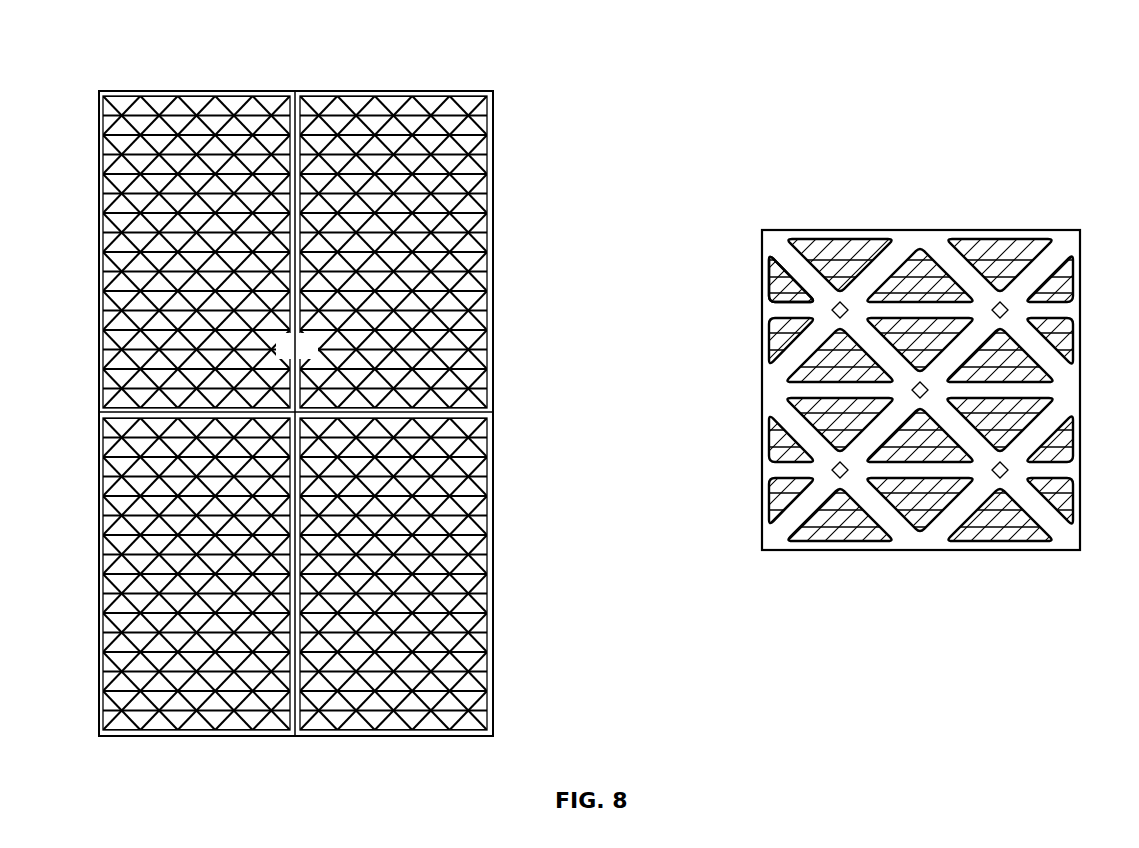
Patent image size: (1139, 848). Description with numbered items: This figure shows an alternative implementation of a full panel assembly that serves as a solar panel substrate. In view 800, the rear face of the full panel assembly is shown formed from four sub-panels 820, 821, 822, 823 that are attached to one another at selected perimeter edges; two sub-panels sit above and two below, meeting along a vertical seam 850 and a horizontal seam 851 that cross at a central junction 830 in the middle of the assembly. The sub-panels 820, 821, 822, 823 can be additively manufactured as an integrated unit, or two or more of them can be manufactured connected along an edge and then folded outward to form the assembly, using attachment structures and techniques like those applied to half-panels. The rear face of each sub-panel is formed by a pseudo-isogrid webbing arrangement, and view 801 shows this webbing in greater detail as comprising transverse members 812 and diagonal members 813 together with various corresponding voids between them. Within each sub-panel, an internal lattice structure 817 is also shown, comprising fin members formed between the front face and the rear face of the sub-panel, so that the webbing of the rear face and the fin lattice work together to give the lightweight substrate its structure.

The view 800 is at (393, 381).
The view 801 is at (794, 335).
The transverse members 812 is at (799, 308).
The diagonal members 813 is at (956, 265).
The internal lattice structure 817 is at (827, 410).
The sub-panel 820 is at (98, 156).
The sub-panel 821 is at (393, 252).
The sub-panel 822 is at (98, 436).
The sub-panel 823 is at (496, 437).
The central junction 830 is at (297, 346).
The vertical divider channel 850 is at (295, 89).
The horizontal divider channel 851 is at (496, 412).